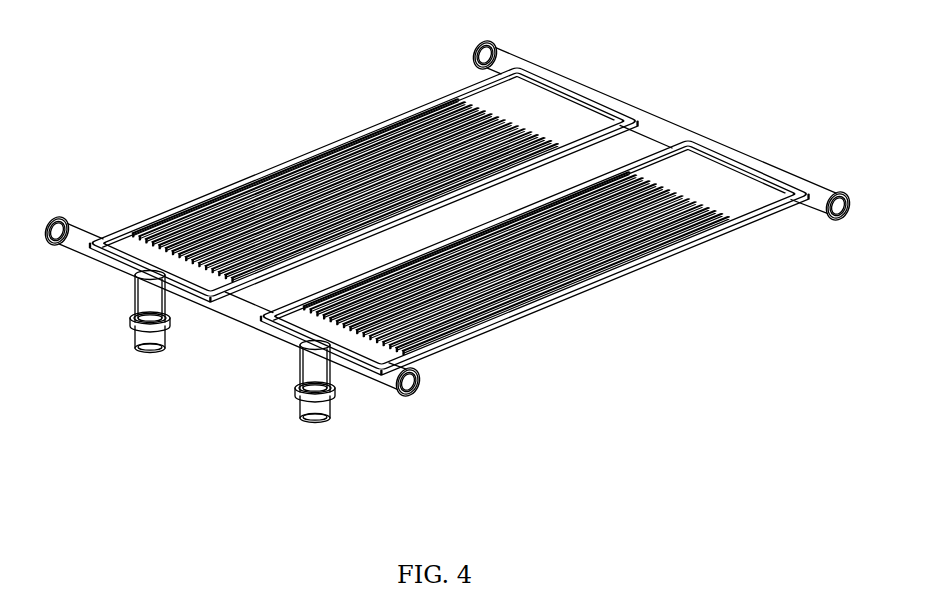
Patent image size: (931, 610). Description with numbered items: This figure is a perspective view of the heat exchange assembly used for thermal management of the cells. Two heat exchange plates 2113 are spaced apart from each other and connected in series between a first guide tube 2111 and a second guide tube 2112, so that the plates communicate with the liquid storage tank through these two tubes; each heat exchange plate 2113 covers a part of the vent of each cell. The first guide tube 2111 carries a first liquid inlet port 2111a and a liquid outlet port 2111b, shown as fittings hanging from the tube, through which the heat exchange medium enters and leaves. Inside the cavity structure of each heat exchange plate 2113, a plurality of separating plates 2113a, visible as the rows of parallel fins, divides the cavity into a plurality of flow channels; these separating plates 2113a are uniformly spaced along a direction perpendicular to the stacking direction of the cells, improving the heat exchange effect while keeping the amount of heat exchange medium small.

The first guide tube 2111 is at (77, 247).
The first liquid inlet port 2111a is at (152, 347).
The liquid outlet port 2111b is at (320, 416).
The second guide tube 2112 is at (810, 204).
The heat exchange plate 2113 is at (153, 213).
The separating plate 2113a is at (513, 298).